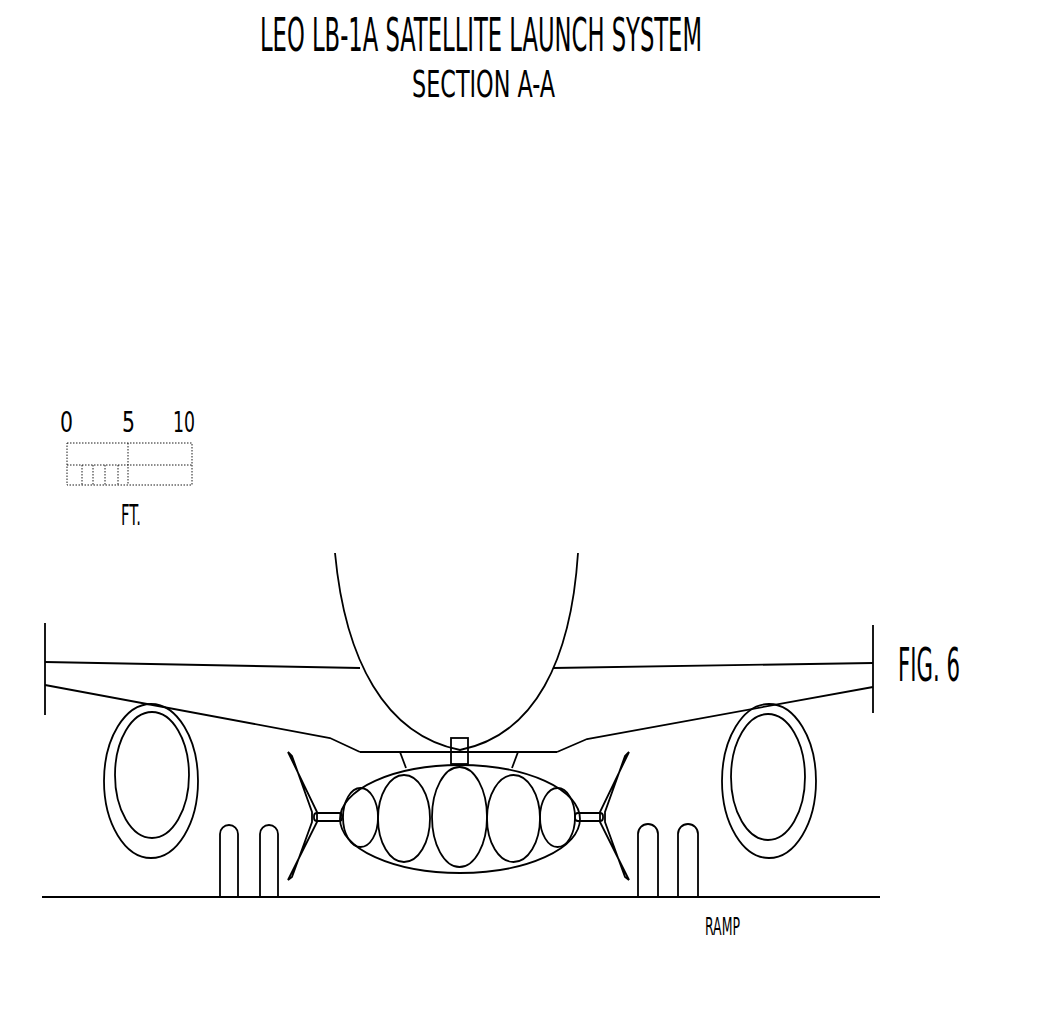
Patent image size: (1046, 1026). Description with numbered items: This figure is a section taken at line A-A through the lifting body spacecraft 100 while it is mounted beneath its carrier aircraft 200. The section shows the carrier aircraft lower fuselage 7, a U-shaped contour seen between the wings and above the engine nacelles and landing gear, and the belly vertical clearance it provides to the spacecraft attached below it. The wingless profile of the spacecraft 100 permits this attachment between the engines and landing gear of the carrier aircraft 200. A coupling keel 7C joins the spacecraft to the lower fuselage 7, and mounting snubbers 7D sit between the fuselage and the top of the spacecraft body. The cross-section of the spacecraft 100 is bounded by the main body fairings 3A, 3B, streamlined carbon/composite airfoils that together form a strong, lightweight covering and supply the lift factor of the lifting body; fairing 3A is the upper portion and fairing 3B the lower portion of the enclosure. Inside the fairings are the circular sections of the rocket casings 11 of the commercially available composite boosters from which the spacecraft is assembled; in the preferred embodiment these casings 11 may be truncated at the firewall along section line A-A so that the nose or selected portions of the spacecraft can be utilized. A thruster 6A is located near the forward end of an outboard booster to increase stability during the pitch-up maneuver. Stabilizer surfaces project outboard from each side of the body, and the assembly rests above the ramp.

The carrier aircraft 200 is at (300, 460).
The lifting body spacecraft 100 is at (296, 794).
The lower fuselage 7 is at (456, 629).
The coupling keel 7C is at (463, 693).
The mounting snubbers 7D is at (445, 730).
The main body fairing 3A is at (463, 752).
The main body fairing 3B is at (467, 893).
The thruster 6A is at (636, 760).
The rocket casings 11 is at (447, 835).